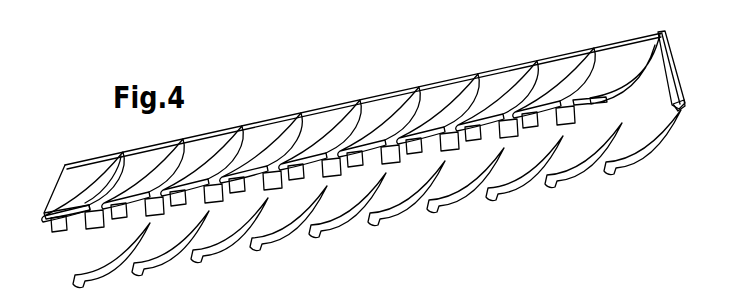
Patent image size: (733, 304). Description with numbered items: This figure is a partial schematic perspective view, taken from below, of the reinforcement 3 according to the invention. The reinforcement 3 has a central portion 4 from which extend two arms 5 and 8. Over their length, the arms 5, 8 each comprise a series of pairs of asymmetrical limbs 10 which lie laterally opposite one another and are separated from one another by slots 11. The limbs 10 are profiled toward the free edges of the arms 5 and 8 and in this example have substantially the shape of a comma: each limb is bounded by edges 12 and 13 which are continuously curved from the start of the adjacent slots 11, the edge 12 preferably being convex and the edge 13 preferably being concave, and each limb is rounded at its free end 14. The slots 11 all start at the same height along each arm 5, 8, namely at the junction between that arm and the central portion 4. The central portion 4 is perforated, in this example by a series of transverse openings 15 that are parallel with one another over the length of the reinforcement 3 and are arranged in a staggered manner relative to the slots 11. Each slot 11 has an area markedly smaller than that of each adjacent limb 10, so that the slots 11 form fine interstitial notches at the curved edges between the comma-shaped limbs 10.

The reinforcement 3 is at (541, 222).
The central portion 4 is at (682, 54).
The arm 5 is at (52, 188).
The arm 8 is at (659, 154).
The asymmetrical limbs 10 is at (211, 160).
The slots 11 is at (609, 216).
The edge 12 is at (205, 248).
The edge 13 is at (84, 246).
The free end 14 is at (429, 205).
The transverse openings 15 is at (681, 117).